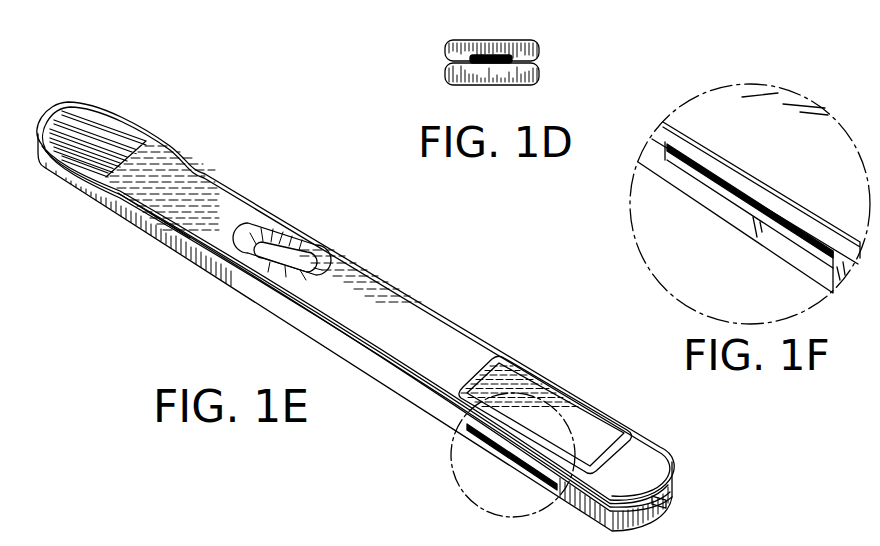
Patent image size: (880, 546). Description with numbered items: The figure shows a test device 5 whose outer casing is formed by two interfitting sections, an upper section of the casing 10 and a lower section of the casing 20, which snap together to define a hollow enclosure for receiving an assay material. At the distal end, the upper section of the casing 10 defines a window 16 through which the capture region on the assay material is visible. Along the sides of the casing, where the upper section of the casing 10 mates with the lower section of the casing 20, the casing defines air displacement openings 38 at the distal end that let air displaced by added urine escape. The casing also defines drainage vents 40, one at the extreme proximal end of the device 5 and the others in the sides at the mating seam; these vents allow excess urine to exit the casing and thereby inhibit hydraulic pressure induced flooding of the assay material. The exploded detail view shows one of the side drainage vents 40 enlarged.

In FIG. 1D, the test device 5 is at (548, 70).
In FIG. 1E, the test device 5 is at (398, 270).
In FIG. 1D, the upper section of the casing 10 is at (451, 43).
In FIG. 1E, the upper section of the casing 10 is at (427, 370).
In FIG. 1D, the lower section of the casing 20 is at (447, 80).
In FIG. 1E, the lower section of the casing 20 is at (64, 182).
In FIG. 1E, the window 16 is at (273, 250).
In FIG. 1E, the air displacement openings 38 is at (147, 215).
In FIG. 1D, the drainage vents 40 is at (493, 53).
In FIG. 1E, the drainage vents 40 is at (503, 453).
In FIG. 1F, the drainage vents 40 is at (718, 185).